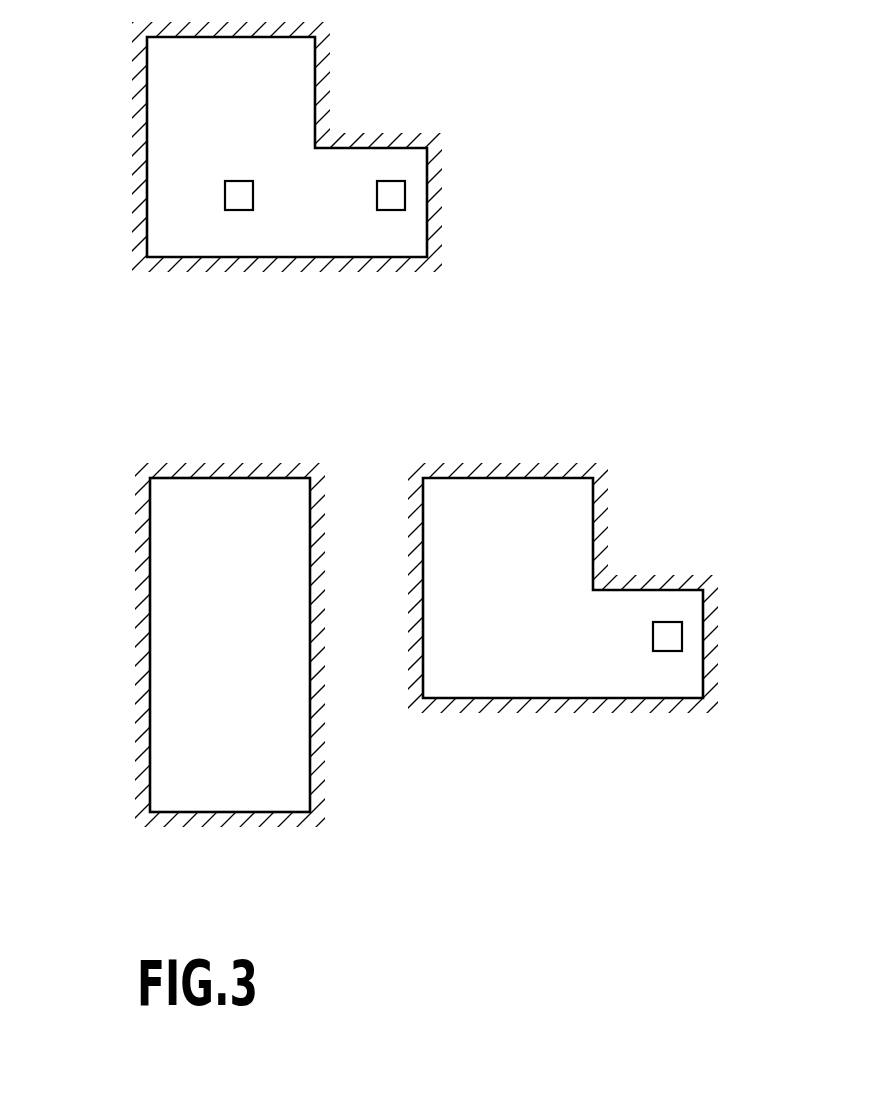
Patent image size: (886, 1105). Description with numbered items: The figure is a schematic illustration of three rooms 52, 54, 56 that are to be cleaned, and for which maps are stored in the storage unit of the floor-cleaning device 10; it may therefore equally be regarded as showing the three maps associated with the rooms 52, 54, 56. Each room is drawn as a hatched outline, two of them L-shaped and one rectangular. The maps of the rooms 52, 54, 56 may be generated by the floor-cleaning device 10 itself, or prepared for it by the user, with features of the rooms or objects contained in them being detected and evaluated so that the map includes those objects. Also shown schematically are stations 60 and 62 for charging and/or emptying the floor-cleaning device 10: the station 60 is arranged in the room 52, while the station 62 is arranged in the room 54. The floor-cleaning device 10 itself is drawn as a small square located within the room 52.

The floor-cleaning device 10 is at (270, 193).
The room 52 is at (268, 116).
The room 54 is at (513, 537).
The room 56 is at (199, 567).
The station 60 is at (405, 192).
The station 62 is at (682, 636).